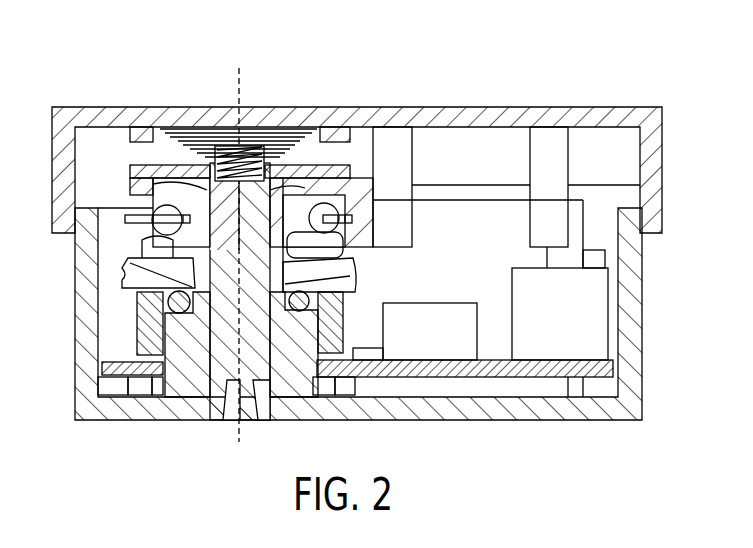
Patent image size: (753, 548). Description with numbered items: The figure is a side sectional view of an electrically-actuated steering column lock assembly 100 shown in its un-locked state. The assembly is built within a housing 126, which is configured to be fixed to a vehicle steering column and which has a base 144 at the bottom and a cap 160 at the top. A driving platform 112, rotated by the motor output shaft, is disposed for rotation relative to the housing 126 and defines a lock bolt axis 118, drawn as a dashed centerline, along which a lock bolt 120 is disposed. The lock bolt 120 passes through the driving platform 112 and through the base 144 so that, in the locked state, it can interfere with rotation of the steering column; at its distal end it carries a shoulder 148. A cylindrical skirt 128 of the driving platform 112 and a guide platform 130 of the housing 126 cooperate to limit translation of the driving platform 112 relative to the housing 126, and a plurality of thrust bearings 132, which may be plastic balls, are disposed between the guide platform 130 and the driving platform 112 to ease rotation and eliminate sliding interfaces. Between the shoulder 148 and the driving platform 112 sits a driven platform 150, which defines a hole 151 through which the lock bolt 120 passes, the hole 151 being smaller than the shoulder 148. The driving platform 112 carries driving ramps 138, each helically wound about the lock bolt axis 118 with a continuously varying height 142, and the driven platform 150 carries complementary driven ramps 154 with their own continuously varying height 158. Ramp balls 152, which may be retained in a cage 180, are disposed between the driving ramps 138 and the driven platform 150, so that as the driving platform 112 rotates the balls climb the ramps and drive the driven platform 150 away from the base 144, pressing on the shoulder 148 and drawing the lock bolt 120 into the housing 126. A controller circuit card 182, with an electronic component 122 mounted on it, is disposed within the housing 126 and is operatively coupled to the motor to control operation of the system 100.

The electrically-actuated steering column lock assembly 100 is at (492, 66).
The cap 160 is at (103, 118).
The shoulder 148 is at (187, 128).
The lock bolt axis 118 is at (236, 85).
The continuously varying height 158 is at (322, 190).
The driven platform 150 is at (334, 192).
The driven ramps 154 is at (330, 207).
The ramp balls 152 is at (352, 197).
The cage 180 is at (350, 210).
The driving ramps 138 is at (340, 243).
The hole 151 is at (196, 186).
The continuously varying height 142 is at (150, 253).
The driving platform 112 is at (347, 277).
The electronic component 122 is at (358, 280).
The controller circuit card 182 is at (612, 373).
The housing 126 is at (628, 410).
The base 144 is at (548, 407).
The lock bolt 120 is at (232, 402).
The thrust bearings 132 is at (261, 405).
The guide platform 130 is at (285, 355).
The cylindrical skirt 128 is at (333, 330).